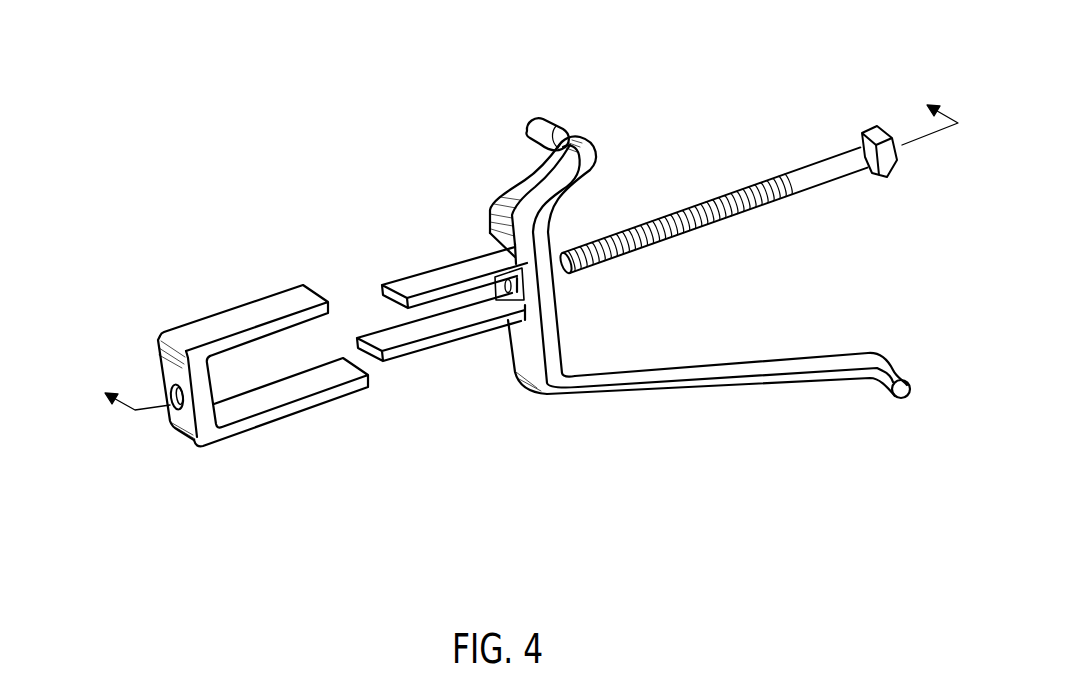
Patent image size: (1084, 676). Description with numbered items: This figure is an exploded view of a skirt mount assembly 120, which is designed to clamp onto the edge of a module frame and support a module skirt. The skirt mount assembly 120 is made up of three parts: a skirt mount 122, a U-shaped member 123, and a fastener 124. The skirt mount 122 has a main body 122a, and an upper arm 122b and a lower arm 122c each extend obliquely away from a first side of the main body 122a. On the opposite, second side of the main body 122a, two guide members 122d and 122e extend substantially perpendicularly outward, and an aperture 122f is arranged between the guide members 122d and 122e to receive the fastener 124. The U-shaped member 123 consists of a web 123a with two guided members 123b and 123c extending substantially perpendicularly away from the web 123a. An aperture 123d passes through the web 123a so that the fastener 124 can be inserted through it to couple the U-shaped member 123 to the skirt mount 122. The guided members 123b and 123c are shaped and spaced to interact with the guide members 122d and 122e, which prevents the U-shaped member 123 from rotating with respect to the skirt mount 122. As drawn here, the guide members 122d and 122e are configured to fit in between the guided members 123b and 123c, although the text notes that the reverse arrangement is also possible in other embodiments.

The skirt mount assembly 120 is at (509, 576).
The skirt mount 122 is at (465, 176).
The main body 122a is at (556, 343).
The upper arm 122b is at (591, 172).
The lower arm 122c is at (753, 360).
The guide member 122d is at (403, 278).
The guide member 122e is at (413, 353).
The aperture 122f is at (496, 292).
The U-shaped member 123 is at (227, 502).
The web 123a is at (182, 433).
The guided member 123b is at (254, 297).
The guided member 123c is at (293, 414).
The aperture 123d is at (165, 408).
The fastener 124 is at (811, 191).